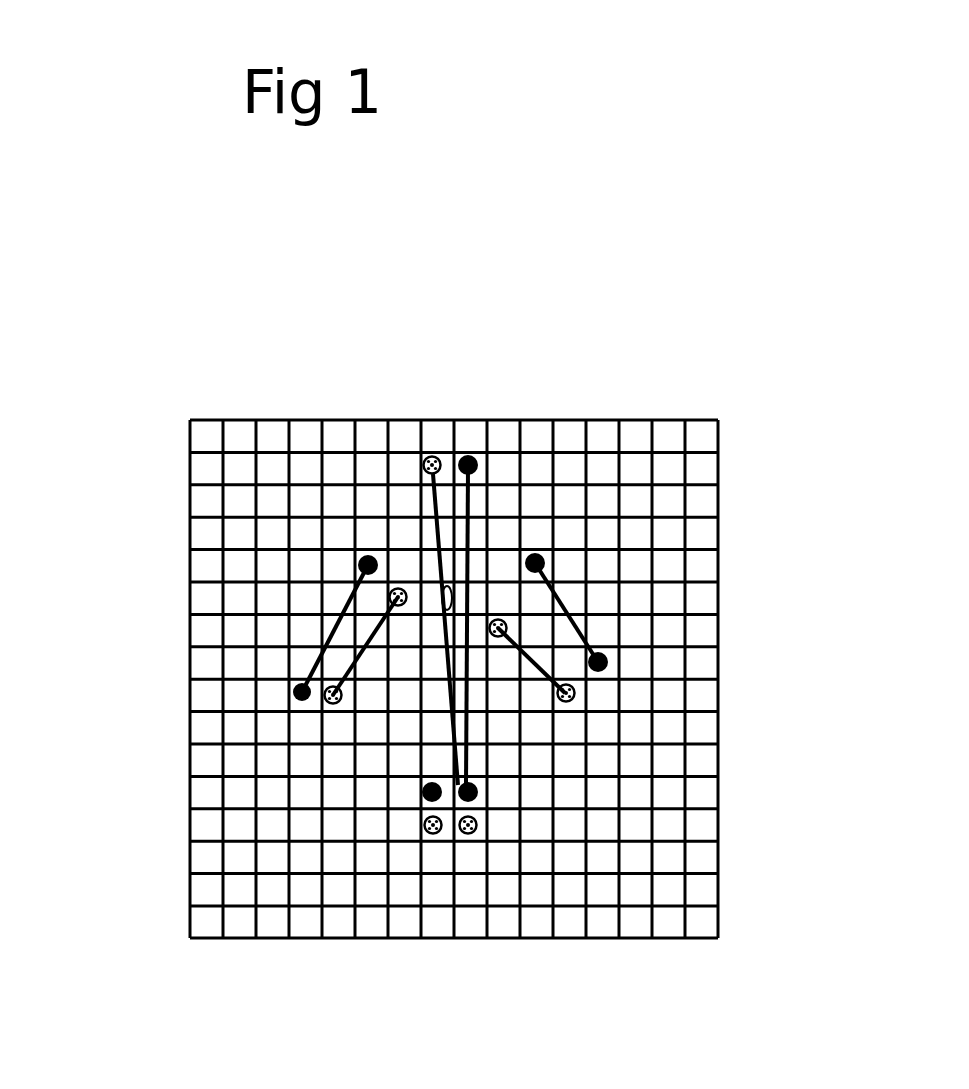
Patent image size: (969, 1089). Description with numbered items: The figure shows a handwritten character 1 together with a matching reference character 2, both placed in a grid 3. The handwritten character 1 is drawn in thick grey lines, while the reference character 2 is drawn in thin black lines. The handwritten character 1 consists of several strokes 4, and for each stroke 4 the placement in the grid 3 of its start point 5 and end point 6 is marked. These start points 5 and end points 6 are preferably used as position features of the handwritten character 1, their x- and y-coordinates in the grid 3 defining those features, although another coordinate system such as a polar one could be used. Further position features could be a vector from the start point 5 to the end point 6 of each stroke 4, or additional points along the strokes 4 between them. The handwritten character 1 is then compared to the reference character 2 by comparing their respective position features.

The handwritten character 1 is at (329, 521).
The reference character 2 is at (586, 518).
The grid 3 is at (384, 700).
The strokes 4 is at (442, 785).
The start point 5 is at (706, 558).
The end point 6 is at (694, 798).